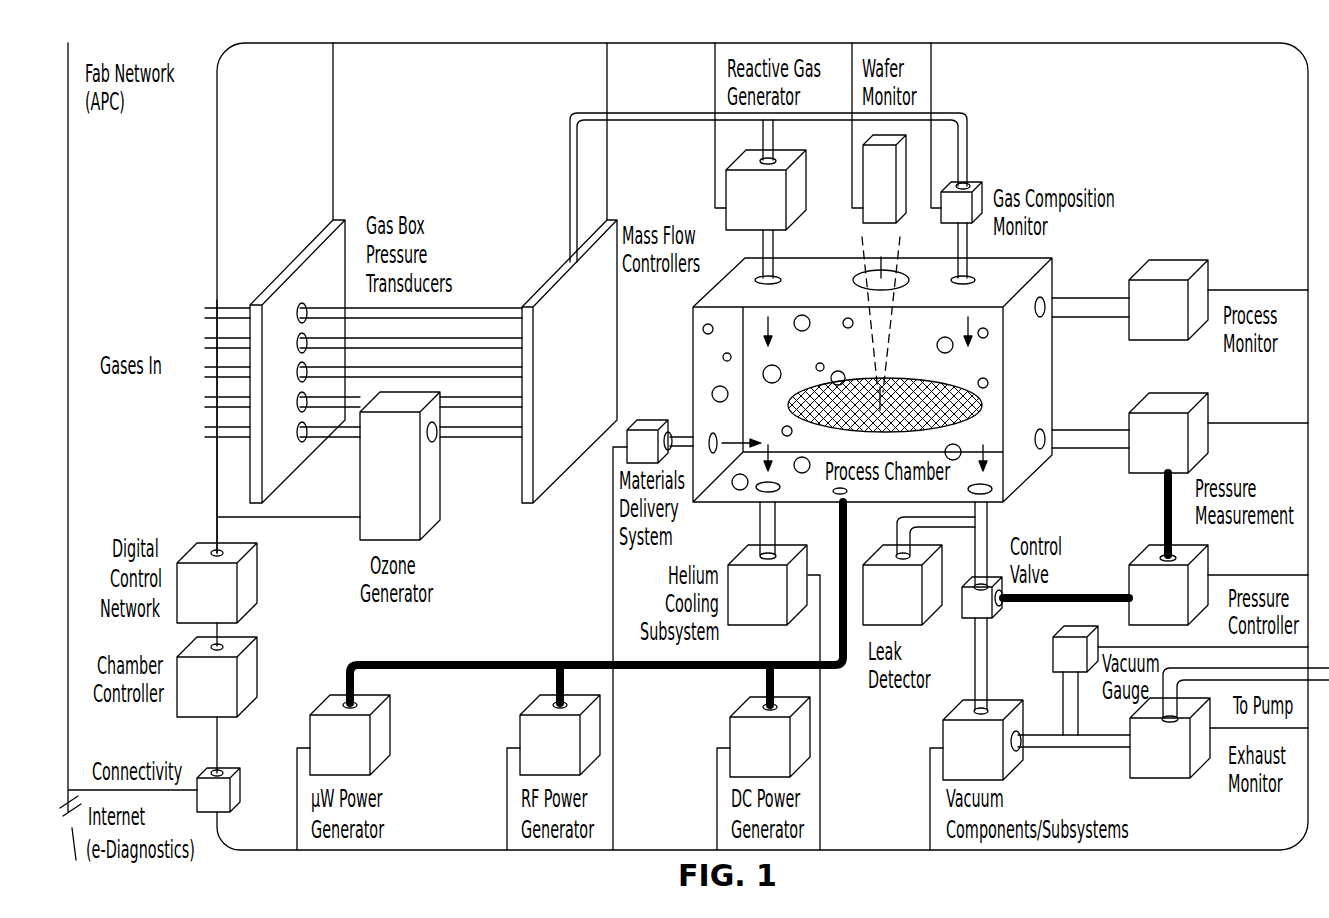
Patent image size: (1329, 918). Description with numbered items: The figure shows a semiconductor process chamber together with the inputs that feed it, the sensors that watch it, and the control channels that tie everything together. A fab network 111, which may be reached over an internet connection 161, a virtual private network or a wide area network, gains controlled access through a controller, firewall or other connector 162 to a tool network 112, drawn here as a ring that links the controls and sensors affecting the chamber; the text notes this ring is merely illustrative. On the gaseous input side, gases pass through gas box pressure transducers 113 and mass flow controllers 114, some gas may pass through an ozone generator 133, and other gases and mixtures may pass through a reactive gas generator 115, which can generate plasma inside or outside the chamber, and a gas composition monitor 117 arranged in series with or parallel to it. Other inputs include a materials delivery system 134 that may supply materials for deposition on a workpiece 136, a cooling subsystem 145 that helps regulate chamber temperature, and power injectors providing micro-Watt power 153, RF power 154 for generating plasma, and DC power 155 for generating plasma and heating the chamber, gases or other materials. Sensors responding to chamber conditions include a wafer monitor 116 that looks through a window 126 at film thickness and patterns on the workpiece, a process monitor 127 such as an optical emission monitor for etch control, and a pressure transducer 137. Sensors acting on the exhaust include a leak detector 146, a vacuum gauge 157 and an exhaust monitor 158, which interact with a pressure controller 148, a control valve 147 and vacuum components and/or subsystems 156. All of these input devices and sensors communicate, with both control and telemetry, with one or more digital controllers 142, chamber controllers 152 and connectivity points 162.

The fab network 111 is at (85, 155).
The tool network 112 is at (235, 155).
The gas box pressure transducers 113 is at (335, 220).
The mass flow controllers 114 is at (609, 220).
The reactive gas generator 115 is at (752, 231).
The wafer monitor 116 is at (905, 153).
The gas composition monitor 117 is at (952, 182).
The window 126 is at (881, 318).
The process monitor 127 is at (1208, 283).
The ozone generator 133 is at (460, 483).
The materials delivery system 134 is at (653, 420).
The workpiece 136 is at (962, 386).
The pressure transducer 137 is at (1208, 416).
The digital controller 142 is at (275, 568).
The cooling subsystem 145 is at (757, 626).
The leak detector 146 is at (925, 627).
The control valve 147 is at (998, 618).
The pressure controller 148 is at (1192, 612).
The chamber controller 152 is at (275, 662).
The micro-Watt power 153 is at (410, 728).
The RF power 154 is at (520, 733).
The DC power 155 is at (730, 733).
The vacuum components and/or subsystems 156 is at (1015, 770).
The vacuum gauge 157 is at (1087, 636).
The exhaust monitor 158 is at (1180, 778).
The internet (e-diagnostics) connection 161 is at (91, 874).
The connector 162 is at (222, 770).